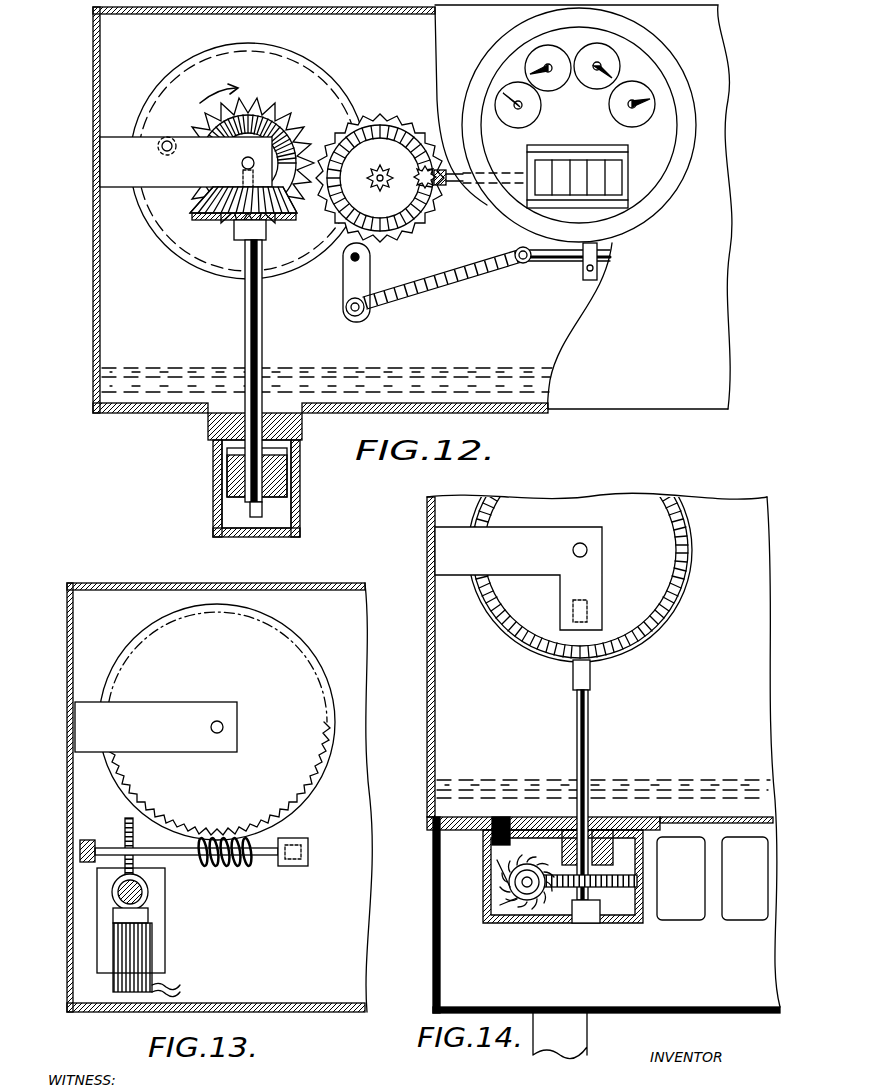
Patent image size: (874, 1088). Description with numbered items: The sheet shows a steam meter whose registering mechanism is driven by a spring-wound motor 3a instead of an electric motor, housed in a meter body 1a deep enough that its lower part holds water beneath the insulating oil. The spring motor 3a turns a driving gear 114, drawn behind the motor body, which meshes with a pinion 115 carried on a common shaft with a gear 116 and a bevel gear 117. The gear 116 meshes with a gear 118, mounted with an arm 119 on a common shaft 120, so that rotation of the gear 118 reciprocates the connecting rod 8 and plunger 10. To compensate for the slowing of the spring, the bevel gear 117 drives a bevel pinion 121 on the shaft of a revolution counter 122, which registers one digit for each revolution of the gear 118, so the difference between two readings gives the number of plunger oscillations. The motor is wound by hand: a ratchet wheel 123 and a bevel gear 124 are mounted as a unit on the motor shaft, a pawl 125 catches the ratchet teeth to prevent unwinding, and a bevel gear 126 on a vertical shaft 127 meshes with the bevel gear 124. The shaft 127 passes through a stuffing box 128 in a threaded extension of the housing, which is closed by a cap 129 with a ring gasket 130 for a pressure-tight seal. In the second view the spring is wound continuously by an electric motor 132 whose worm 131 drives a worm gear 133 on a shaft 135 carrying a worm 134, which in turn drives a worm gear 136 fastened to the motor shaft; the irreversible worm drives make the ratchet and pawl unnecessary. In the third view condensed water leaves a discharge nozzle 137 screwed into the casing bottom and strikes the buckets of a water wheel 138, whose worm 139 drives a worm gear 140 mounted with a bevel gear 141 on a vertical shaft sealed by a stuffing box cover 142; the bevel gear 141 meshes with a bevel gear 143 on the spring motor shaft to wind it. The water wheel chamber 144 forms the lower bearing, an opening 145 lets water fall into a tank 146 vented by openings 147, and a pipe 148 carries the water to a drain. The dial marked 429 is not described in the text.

In FIG. 12, the meter body 1a is at (95, 331).
In FIG. 13, the meter body 1a is at (67, 910).
In FIG. 14, the meter body 1a is at (430, 770).
In FIG. 12, the spring-wound motor 3a is at (320, 66).
In FIG. 13, the spring-wound motor 3a is at (305, 648).
In FIG. 14, the spring-wound motor 3a is at (700, 543).
In FIG. 12, the connecting rod 8 is at (470, 280).
In FIG. 12, the plunger 10 is at (555, 262).
In FIG. 12, the driving gear 114 is at (353, 91).
In FIG. 12, the pinion 115 is at (373, 168).
In FIG. 12, the gear 116 is at (410, 230).
In FIG. 12, the bevel gear 117 is at (430, 205).
In FIG. 12, the gear 118 is at (340, 265).
In FIG. 12, the arm 119 is at (345, 307).
In FIG. 12, the common shaft 120 is at (360, 257).
In FIG. 12, the bevel pinion 121 is at (420, 160).
In FIG. 12, the revolution counter 122 is at (613, 180).
In FIG. 12, the ratchet wheel 123 is at (257, 98).
In FIG. 12, the bevel gear 124 is at (277, 128).
In FIG. 12, the pawl 125 is at (180, 127).
In FIG. 13, the pawl 125 is at (156, 727).
In FIG. 14, the pawl 125 is at (518, 578).
In FIG. 12, the bevel gear 126 is at (280, 218).
In FIG. 12, the shaft 127 is at (247, 322).
In FIG. 12, the stuffing box 128 is at (227, 472).
In FIG. 12, the cap 129 is at (213, 507).
In FIG. 12, the ring gasket 130 is at (213, 428).
In FIG. 13, the worm 131 is at (143, 900).
In FIG. 13, the electric motor 132 is at (152, 955).
In FIG. 13, the worm gear 133 is at (125, 820).
In FIG. 13, the worm 134 is at (240, 862).
In FIG. 13, the shaft 135 is at (173, 860).
In FIG. 13, the worm gear 136 is at (308, 803).
In FIG. 14, the discharge nozzle 137 is at (497, 842).
In FIG. 14, the water wheel 138 is at (497, 893).
In FIG. 14, the worm 139 is at (500, 905).
In FIG. 14, the worm gear 140 is at (608, 888).
In FIG. 14, the bevel gear 141 is at (595, 662).
In FIG. 14, the stuffing box cover 142 is at (610, 847).
In FIG. 14, the bevel gear 143 is at (675, 600).
In FIG. 14, the water wheel chamber 144 is at (553, 922).
In FIG. 14, the opening 145 is at (520, 915).
In FIG. 14, the tank 146 is at (433, 962).
In FIG. 14, the openings 147 is at (730, 918).
In FIG. 14, the pipe 148 is at (587, 1027).
In FIG. 12, the indicator dial 429 is at (612, 58).